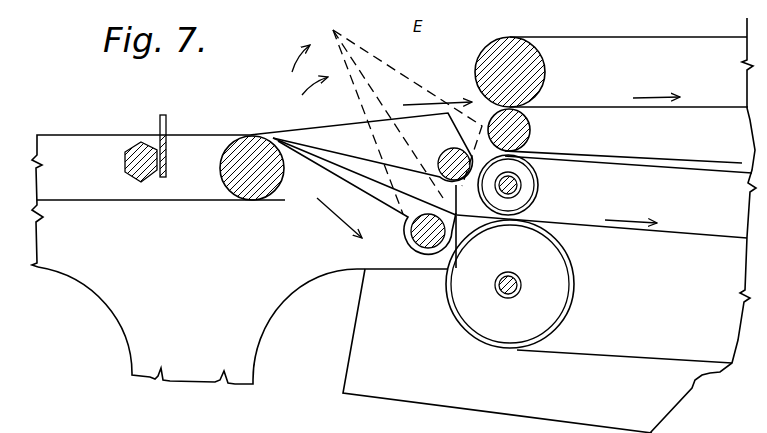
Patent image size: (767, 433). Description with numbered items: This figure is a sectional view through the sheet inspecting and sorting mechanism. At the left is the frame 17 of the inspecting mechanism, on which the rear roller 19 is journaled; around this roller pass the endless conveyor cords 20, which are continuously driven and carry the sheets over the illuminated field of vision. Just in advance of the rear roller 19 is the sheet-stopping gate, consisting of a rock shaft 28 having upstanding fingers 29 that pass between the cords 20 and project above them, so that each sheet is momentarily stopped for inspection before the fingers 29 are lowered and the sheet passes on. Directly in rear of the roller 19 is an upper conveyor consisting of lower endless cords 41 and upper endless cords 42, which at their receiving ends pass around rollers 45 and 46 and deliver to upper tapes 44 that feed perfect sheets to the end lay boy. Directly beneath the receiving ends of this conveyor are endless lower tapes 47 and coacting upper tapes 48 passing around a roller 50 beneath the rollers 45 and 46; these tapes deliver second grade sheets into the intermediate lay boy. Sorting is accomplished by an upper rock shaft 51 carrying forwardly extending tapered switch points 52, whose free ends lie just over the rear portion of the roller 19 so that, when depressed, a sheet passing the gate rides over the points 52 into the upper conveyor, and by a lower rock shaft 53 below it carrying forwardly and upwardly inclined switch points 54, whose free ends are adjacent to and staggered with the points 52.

The frame 17 is at (118, 323).
The rear roller 19 is at (246, 200).
The cords 20 is at (84, 135).
The rock shaft 28 is at (152, 172).
The upstanding fingers 29 is at (168, 126).
The lower endless cords 41 is at (659, 110).
The upper endless cords 42 is at (591, 108).
The upper tapes 44 is at (563, 257).
The roller 45 is at (531, 130).
The roller 46 is at (532, 66).
The lower tapes 47 is at (627, 353).
The upper tapes 48 is at (628, 168).
The roller 50 is at (528, 183).
The upper rock shaft 51 is at (447, 156).
The switch points 52 is at (318, 128).
The lower rock shaft 53 is at (414, 240).
The switch points 54 is at (326, 165).